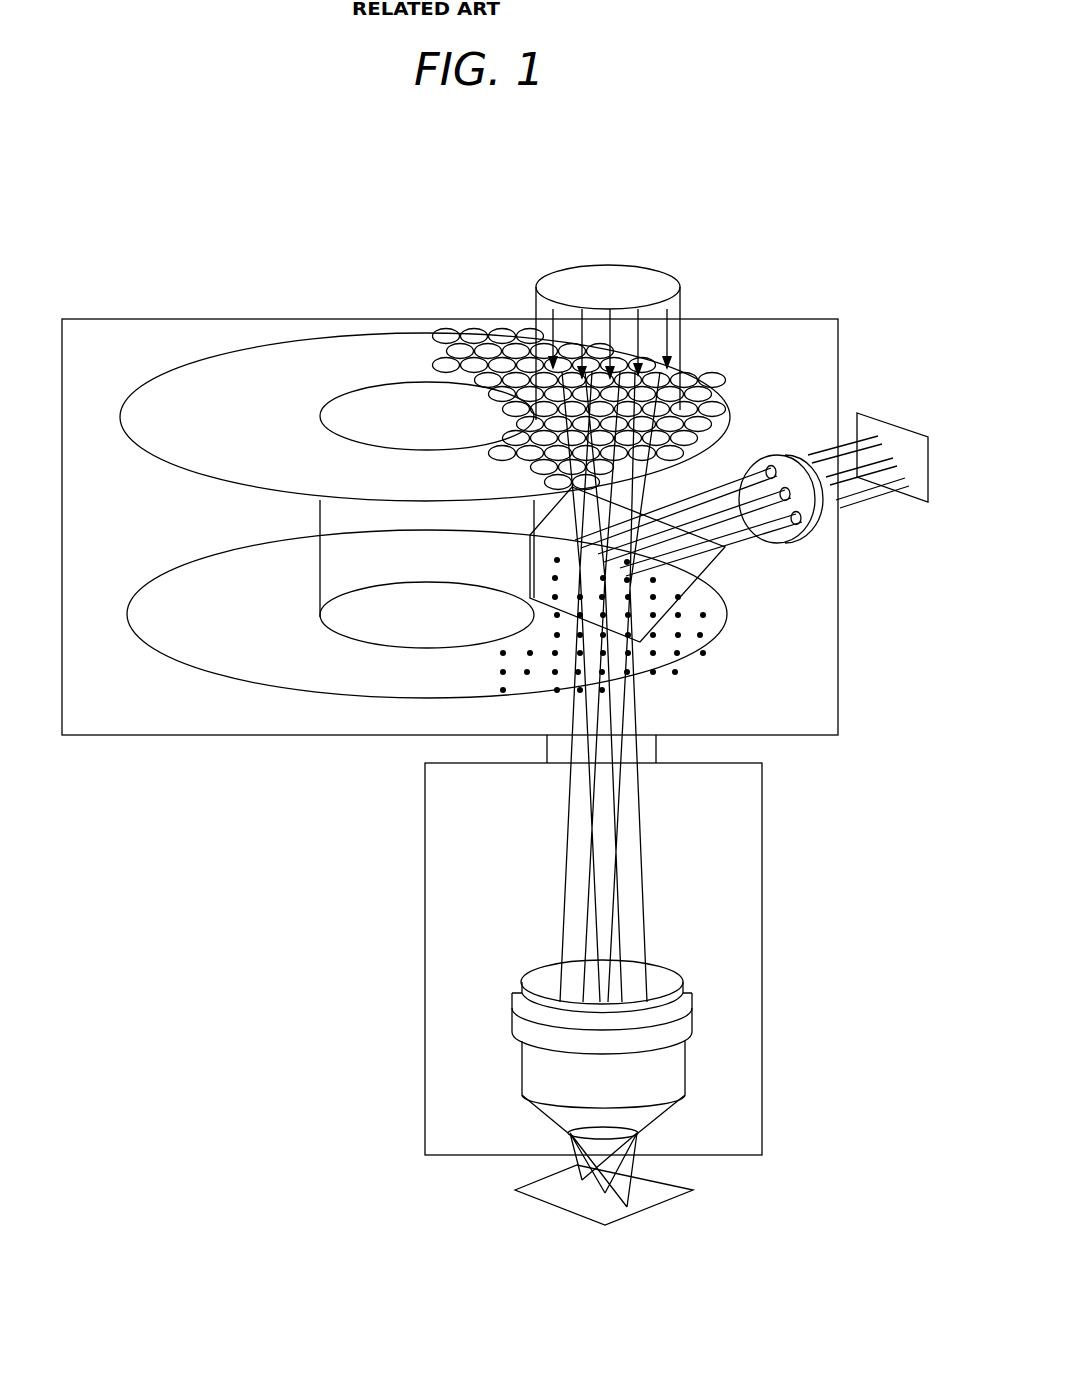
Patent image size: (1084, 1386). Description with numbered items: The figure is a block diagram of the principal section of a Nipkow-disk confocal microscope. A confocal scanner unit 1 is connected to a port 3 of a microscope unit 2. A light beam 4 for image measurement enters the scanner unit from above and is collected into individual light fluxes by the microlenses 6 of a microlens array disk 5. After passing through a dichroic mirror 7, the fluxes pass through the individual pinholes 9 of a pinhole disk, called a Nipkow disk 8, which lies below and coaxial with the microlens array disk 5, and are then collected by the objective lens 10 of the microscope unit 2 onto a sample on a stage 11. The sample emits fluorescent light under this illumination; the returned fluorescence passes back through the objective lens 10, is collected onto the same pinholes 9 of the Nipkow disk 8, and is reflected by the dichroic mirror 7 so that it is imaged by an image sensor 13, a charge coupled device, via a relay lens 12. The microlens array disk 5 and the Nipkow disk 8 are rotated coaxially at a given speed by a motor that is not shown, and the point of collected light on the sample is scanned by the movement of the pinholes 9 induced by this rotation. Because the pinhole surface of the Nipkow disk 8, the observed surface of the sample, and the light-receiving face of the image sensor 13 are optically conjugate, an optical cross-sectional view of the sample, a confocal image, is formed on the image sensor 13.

The confocal scanner unit 1 is at (197, 317).
The microscope unit 2 is at (425, 916).
The port 3 is at (657, 752).
The light beam for image measurement 4 is at (645, 267).
The microlens array disk 5 is at (298, 340).
The microlenses 6 is at (687, 381).
The dichroic mirror 7 is at (727, 630).
The pinhole disk (Nipkow disk) 8 is at (228, 677).
The pinholes 9 is at (703, 593).
The objective lens 10 is at (687, 1060).
The stage 11 is at (575, 1214).
The relay lens 12 is at (820, 534).
The image sensor 13 is at (882, 418).